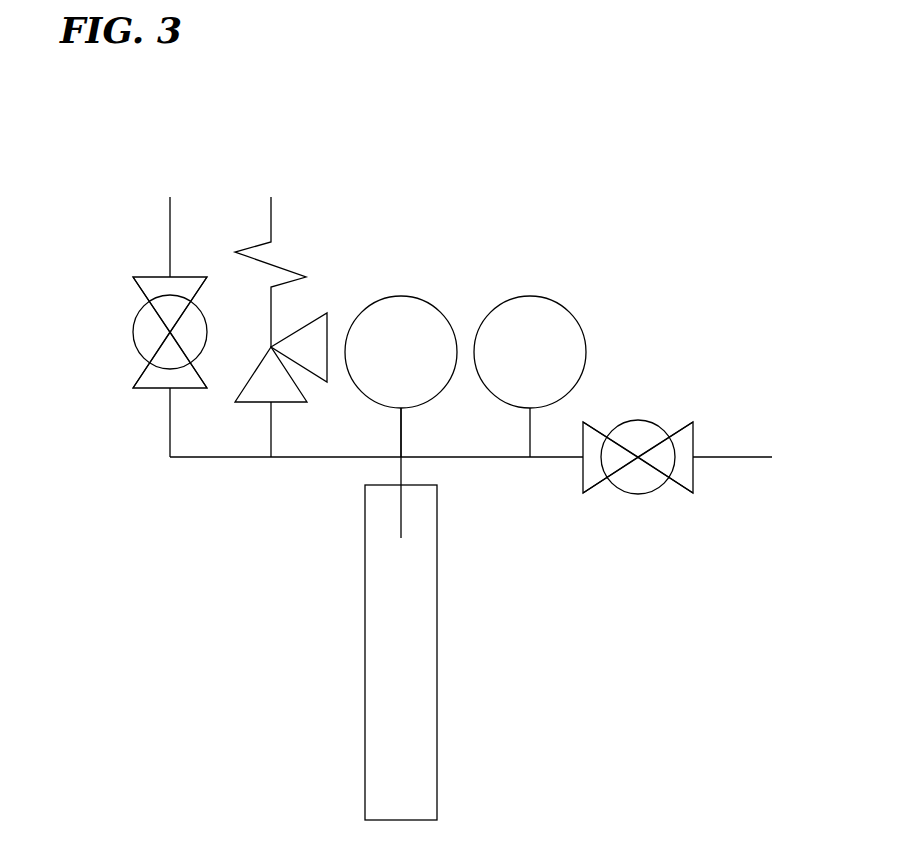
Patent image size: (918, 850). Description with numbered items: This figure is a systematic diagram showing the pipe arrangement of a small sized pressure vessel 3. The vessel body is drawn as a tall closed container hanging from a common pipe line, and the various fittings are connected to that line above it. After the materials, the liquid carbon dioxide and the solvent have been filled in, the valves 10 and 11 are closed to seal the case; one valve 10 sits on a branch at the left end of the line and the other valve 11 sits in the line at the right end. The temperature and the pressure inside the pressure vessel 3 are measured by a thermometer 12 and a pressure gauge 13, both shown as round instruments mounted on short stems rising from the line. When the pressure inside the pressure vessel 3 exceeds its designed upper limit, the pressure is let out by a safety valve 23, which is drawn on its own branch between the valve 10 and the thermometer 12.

The pressure vessel 3 is at (415, 133).
The valve 10 is at (132, 325).
The valve 11 is at (643, 420).
The thermometer 12 is at (400, 293).
The pressure gauge 13 is at (525, 293).
The safety valve 23 is at (305, 318).